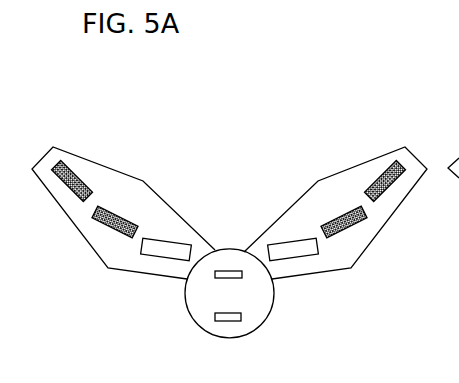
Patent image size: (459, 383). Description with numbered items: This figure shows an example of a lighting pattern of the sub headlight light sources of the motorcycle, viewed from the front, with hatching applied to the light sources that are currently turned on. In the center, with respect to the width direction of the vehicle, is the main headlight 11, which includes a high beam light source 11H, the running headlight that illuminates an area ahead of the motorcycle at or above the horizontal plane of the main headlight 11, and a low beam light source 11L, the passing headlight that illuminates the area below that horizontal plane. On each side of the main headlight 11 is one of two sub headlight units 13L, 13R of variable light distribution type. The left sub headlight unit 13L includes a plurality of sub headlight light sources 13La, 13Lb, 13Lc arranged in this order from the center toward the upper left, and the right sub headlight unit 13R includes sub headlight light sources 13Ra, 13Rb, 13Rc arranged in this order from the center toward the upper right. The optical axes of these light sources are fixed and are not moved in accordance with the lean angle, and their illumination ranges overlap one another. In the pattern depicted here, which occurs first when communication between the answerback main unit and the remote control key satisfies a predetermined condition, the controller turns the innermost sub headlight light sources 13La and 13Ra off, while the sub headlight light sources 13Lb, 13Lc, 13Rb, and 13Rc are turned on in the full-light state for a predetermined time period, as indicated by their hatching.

The main headlight 11 is at (60, 285).
The high beam light source 11H is at (215, 274).
The low beam light source 11L is at (223, 321).
The sub headlight unit 13R is at (203, 167).
The sub headlight light source 13Ra is at (165, 240).
The sub headlight light source 13Rb is at (117, 214).
The sub headlight light source 13Rc is at (74, 172).
The sub headlight unit 13L is at (378, 95).
The sub headlight light source 13La is at (288, 240).
The sub headlight light source 13Lb is at (332, 216).
The sub headlight light source 13Lc is at (377, 180).